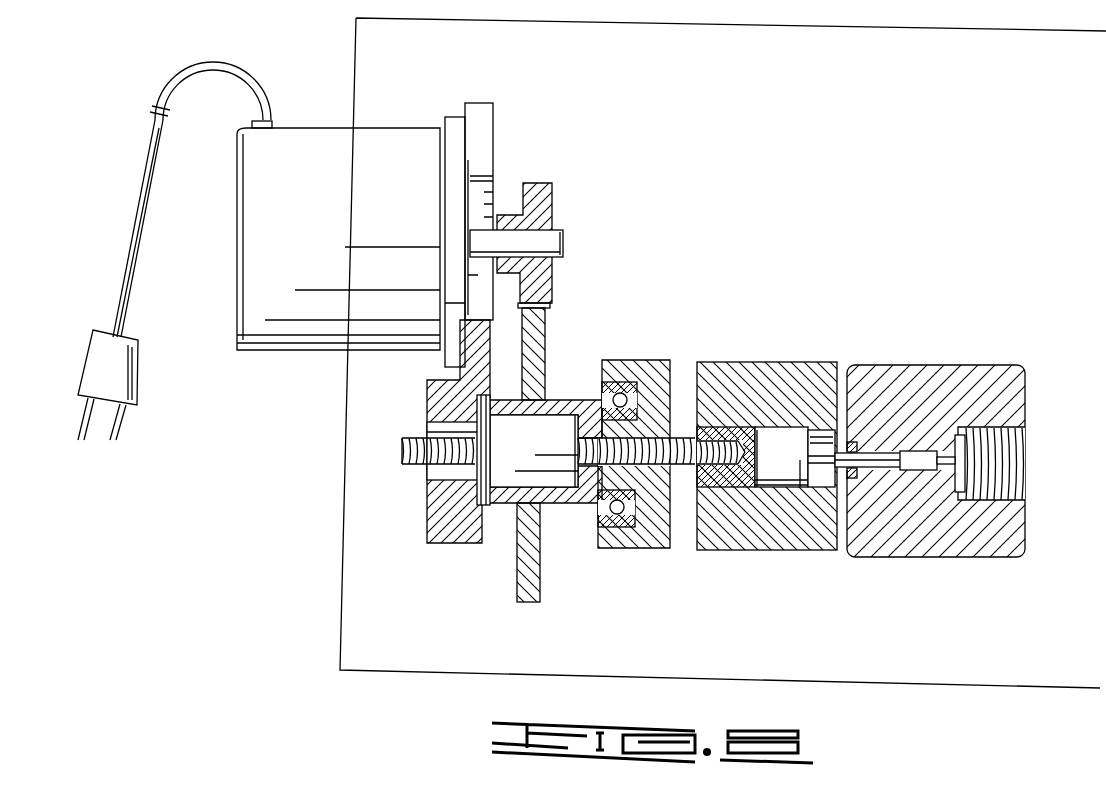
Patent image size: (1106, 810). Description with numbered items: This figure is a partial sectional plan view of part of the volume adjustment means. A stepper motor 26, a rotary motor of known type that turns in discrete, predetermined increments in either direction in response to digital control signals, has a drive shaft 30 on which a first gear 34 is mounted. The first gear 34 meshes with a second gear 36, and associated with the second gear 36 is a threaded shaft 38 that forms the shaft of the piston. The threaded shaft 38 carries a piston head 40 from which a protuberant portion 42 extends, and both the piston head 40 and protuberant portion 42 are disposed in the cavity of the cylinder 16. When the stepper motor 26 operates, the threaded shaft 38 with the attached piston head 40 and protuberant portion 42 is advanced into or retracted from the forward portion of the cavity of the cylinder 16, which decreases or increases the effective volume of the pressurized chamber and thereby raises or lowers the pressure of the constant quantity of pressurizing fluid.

The cylinder 16 is at (920, 378).
The stepper motor 26 is at (300, 310).
The drive shaft 30 is at (551, 239).
The first gear 34 is at (551, 282).
The second gear 36 is at (536, 346).
The threaded shaft 38 is at (418, 462).
The piston head 40 is at (787, 465).
The protuberant portion 42 is at (880, 455).